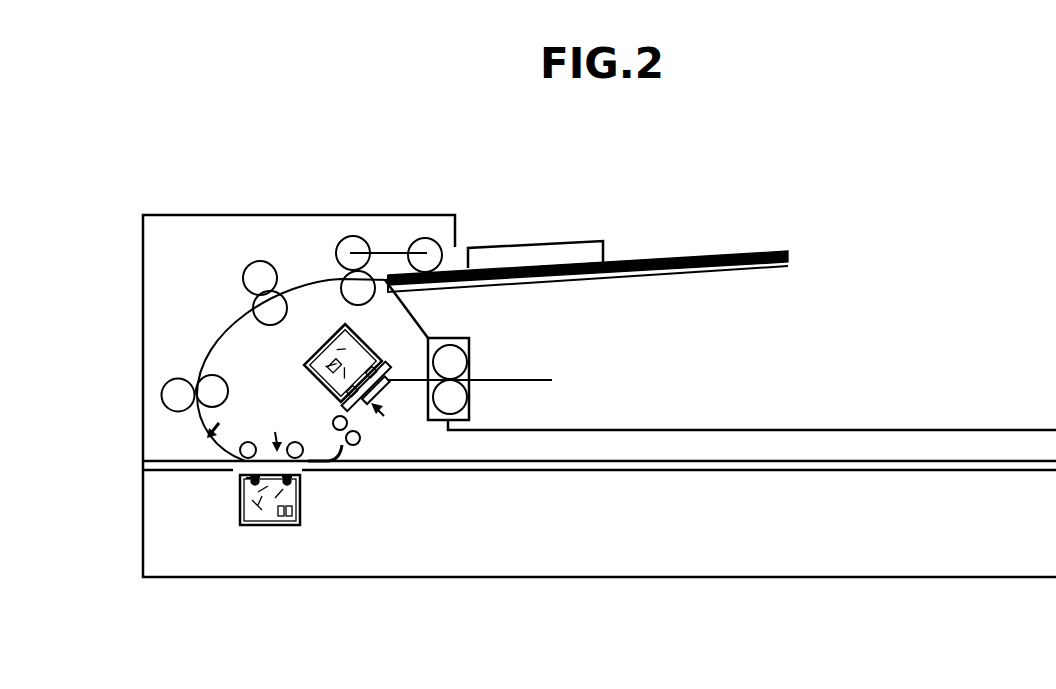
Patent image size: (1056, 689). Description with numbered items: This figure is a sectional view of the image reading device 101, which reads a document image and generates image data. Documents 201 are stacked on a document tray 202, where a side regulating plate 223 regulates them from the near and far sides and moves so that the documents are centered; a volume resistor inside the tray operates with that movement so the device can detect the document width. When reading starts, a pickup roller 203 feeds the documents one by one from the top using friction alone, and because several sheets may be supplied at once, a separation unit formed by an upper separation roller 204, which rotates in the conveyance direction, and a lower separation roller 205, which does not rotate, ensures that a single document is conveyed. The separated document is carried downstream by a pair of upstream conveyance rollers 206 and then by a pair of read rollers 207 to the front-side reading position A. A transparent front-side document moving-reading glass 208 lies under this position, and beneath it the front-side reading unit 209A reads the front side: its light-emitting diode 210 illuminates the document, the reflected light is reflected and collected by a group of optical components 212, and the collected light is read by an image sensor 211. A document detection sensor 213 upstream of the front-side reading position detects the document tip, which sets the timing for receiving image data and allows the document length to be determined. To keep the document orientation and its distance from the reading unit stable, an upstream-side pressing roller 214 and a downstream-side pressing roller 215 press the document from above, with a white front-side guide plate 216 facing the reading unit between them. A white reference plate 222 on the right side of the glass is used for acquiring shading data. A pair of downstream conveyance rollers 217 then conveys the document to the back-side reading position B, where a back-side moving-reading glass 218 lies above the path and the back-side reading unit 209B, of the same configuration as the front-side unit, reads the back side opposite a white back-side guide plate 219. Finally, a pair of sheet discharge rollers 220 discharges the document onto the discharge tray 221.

The image reading device 101 is at (172, 215).
The document 201 is at (630, 252).
The document tray 202 is at (630, 276).
The pickup roller 203 is at (425, 238).
The upper separation roller 204 is at (353, 236).
The lower separation roller 205 is at (340, 290).
The pair of upstream conveyance rollers 206 is at (266, 260).
The pair of read rollers 207 is at (178, 379).
The front-side document moving-reading glass 208 is at (240, 475).
The front-side reading unit 209A is at (240, 512).
The back-side reading unit 209B is at (373, 352).
The light-emitting diode 210 is at (300, 481).
The image sensor 211 is at (288, 528).
The group of optical components 212 is at (298, 505).
The document detection sensor 213 is at (207, 431).
The upstream-side pressing roller 214 is at (199, 377).
The downstream-side pressing roller 215 is at (297, 440).
The white front-side guide plate 216 is at (248, 442).
The pair of downstream conveyance rollers 217 is at (362, 444).
The back-side moving-reading glass 218 is at (388, 368).
The white back-side guide plate 219 is at (386, 418).
The pair of sheet discharge rollers 220 is at (469, 396).
The discharge tray 221 is at (730, 430).
The white reference plate 222 is at (322, 508).
The side regulating plate 223 is at (565, 247).
The front-side reading position A is at (275, 432).
The back-side reading position B is at (384, 416).